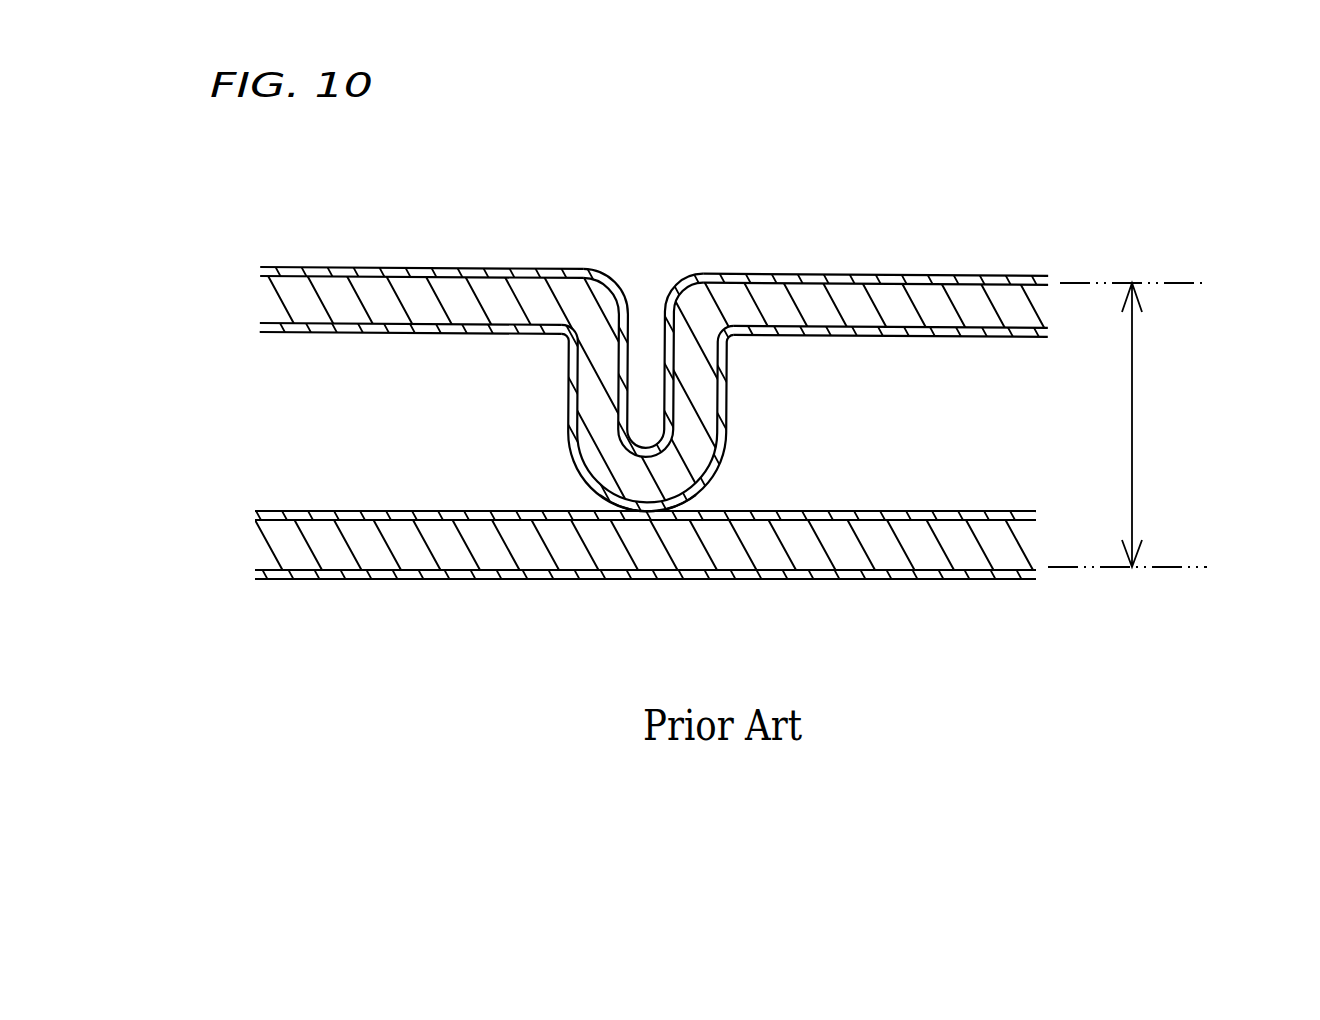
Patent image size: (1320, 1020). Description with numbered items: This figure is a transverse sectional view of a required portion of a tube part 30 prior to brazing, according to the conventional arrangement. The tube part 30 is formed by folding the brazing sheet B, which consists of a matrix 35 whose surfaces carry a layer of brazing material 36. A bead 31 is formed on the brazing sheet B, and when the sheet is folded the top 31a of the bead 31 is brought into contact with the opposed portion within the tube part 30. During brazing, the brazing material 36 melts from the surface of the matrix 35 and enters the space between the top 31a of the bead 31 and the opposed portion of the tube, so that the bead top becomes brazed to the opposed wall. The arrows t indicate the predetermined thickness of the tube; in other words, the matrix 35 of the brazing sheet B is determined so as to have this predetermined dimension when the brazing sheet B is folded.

The tube part 30 is at (923, 231).
The bead 31 is at (646, 443).
The top of the bead 31a is at (647, 517).
The matrix 35 is at (293, 305).
The brazing material 36 is at (303, 270).
The brazing sheet B is at (231, 258).
The predetermined thickness t is at (1132, 427).